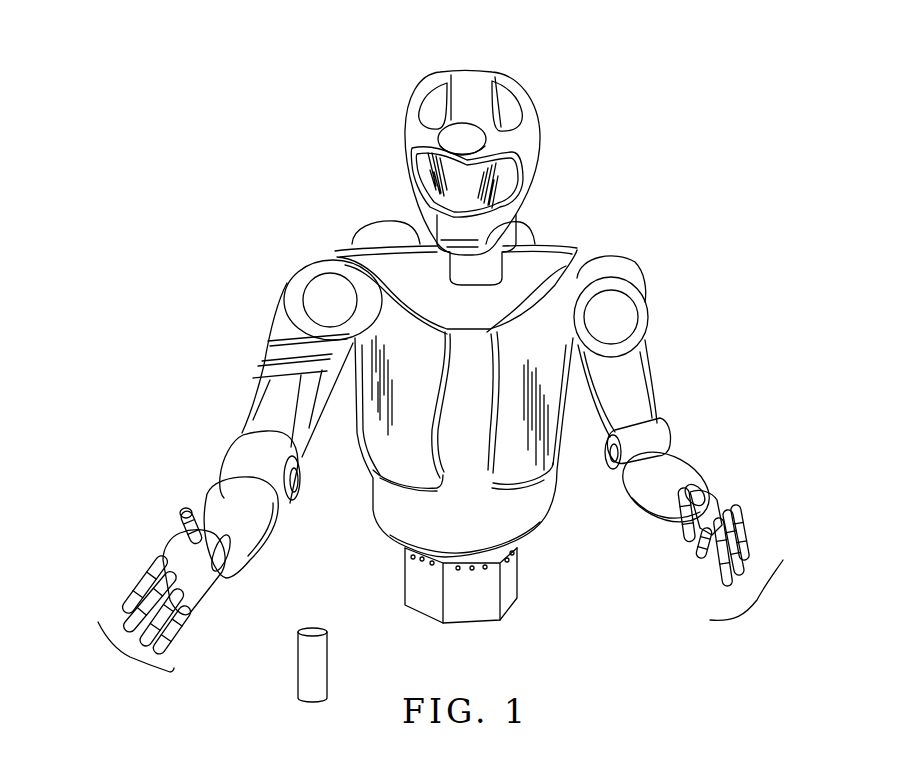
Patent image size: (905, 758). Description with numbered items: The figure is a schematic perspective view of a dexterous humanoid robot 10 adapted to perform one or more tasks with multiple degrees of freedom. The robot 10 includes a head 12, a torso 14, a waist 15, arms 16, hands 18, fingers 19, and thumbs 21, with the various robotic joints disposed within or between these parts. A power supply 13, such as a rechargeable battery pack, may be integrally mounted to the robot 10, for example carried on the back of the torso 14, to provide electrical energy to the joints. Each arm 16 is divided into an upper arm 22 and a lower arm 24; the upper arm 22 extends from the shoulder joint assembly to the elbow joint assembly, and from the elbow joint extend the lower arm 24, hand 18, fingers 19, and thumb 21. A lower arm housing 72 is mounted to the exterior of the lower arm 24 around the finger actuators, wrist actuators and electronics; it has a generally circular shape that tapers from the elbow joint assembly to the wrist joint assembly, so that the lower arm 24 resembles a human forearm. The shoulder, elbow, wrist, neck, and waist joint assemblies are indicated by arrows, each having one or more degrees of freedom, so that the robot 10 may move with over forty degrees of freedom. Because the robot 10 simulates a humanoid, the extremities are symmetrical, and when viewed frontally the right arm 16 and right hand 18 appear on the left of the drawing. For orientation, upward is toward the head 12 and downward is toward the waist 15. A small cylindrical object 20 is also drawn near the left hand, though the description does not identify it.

The dexterous humanoid robot 10 is at (302, 222).
The head 12 is at (483, 71).
The power supply 13 is at (382, 222).
The torso 14 is at (398, 435).
The waist 15 is at (470, 520).
The arm 16 is at (258, 357).
The hand 18 is at (193, 583).
The fingers 19 is at (130, 657).
The object (cylinder) 20 is at (297, 665).
The thumb 21 is at (178, 517).
The upper arm 22 is at (246, 402).
The lower arm 24 is at (273, 542).
The lower arm housing 72 is at (184, 508).